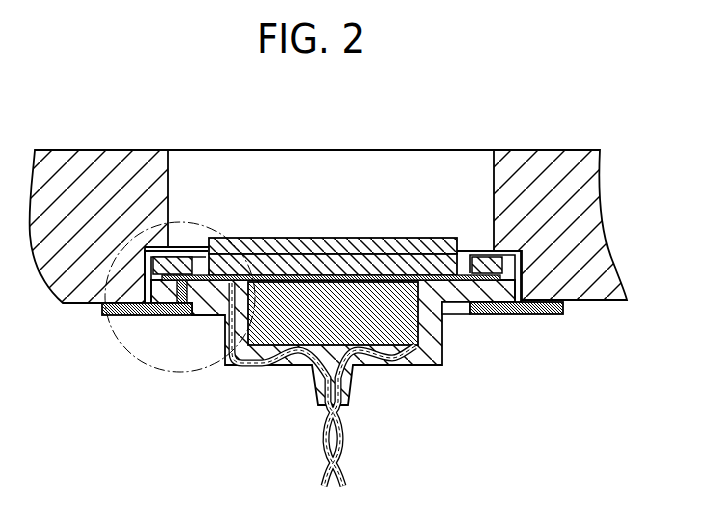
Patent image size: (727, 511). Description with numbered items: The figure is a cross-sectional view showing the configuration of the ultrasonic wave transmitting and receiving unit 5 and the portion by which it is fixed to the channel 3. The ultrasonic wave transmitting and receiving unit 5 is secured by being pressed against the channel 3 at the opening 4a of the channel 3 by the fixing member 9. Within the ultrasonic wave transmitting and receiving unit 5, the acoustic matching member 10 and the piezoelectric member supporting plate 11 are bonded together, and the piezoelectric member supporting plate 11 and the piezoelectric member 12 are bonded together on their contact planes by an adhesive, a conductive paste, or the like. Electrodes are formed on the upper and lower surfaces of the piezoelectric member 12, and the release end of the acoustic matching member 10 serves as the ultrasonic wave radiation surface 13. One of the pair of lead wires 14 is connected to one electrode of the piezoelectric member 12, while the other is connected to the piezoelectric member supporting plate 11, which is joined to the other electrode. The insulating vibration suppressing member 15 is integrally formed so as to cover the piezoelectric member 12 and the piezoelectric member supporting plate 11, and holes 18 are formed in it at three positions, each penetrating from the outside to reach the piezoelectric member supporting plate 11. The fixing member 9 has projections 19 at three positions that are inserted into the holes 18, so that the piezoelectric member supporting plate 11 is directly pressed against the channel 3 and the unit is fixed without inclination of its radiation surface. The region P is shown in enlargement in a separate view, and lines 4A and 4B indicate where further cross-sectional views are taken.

The channel 3 is at (550, 150).
The opening 4a is at (400, 193).
The ultrasonic wave transmitting and receiving unit 5 is at (333, 176).
The fixing member 9 is at (536, 315).
The acoustic matching member 10 is at (267, 238).
The piezoelectric member supporting plate 11 is at (454, 272).
The piezoelectric member 12 is at (273, 333).
The ultrasonic wave radiation surface 13 is at (308, 238).
The lead wires 14 is at (328, 445).
The insulating vibration suppressing member 15 is at (440, 366).
The holes 18 is at (197, 316).
The projections 19 is at (182, 316).
The region P is at (197, 222).
The line 4A- 4A is at (142, 316).
The line 4B- 4B is at (150, 268).